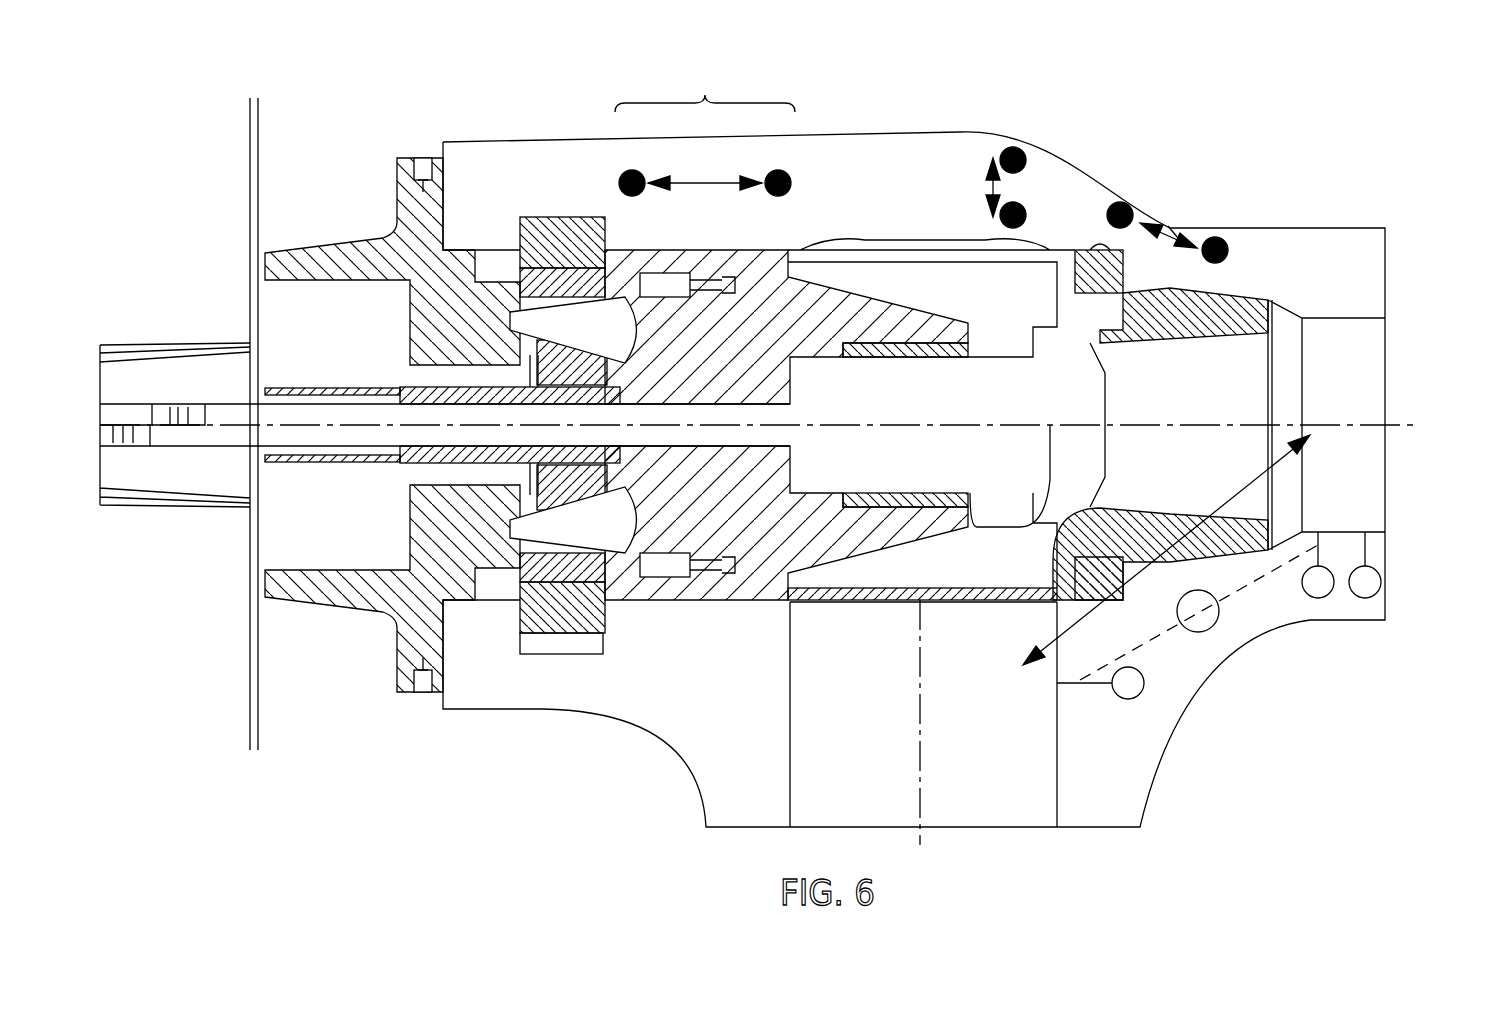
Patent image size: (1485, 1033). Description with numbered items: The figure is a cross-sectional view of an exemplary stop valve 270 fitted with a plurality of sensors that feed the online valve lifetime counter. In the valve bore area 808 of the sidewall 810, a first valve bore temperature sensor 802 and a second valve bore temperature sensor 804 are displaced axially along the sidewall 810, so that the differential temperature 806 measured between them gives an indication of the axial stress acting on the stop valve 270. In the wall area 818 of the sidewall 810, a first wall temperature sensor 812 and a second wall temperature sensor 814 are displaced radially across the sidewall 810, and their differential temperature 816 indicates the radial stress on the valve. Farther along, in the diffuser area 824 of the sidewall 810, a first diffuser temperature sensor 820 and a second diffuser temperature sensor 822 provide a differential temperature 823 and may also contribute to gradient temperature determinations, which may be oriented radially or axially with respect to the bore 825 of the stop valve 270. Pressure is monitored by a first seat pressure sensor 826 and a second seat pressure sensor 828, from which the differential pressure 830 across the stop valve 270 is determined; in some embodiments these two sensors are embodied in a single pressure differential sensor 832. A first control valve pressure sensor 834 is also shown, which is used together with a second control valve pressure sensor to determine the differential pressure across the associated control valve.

The stop valve 270 is at (808, 57).
The first valve bore temperature sensor 802 is at (620, 181).
The second valve bore temperature sensor 804 is at (790, 178).
The differential temperature 806 is at (697, 183).
The valve bore area 808 is at (705, 82).
The sidewall 810 is at (840, 128).
The first wall temperature sensor 812 is at (1022, 150).
The second wall temperature sensor 814 is at (1000, 221).
The differential temperature 816 is at (985, 187).
The wall area 818 is at (962, 133).
The first diffuser temperature sensor 820 is at (1125, 203).
The second diffuser temperature sensor 822 is at (1222, 240).
The differential temperature 823 is at (1173, 232).
The diffuser area 824 is at (1200, 225).
The bore 825 is at (1258, 371).
The first seat pressure sensor 826 is at (1133, 699).
The second seat pressure sensor 828 is at (1306, 594).
The differential pressure 830 is at (1235, 495).
The single pressure differential sensor 832 is at (1212, 632).
The first control valve pressure sensor 834 is at (1375, 569).